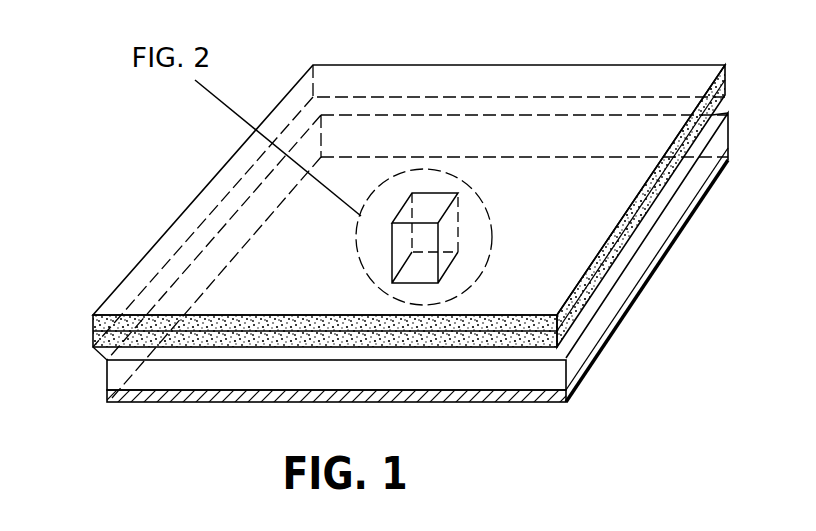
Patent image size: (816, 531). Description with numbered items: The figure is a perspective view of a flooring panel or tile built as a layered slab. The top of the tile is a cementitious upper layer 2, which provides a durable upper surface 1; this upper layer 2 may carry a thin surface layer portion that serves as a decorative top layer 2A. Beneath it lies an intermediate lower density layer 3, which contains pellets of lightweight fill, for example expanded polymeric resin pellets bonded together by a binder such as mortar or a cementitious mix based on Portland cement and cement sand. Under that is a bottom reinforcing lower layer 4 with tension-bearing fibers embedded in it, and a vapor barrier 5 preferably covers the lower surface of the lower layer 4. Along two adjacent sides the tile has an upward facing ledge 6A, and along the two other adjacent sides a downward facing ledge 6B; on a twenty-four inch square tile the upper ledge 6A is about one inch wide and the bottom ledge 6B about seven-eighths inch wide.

The upper surface 1 is at (542, 100).
The upper layer 2 is at (93, 323).
The decorative top layer 2A is at (622, 226).
The intermediate lower density layer 3 is at (623, 285).
The lower layer 4 is at (716, 177).
The vapor barrier 5 is at (162, 403).
The upward facing ledge 6A is at (718, 116).
The downward facing ledge 6B is at (107, 350).